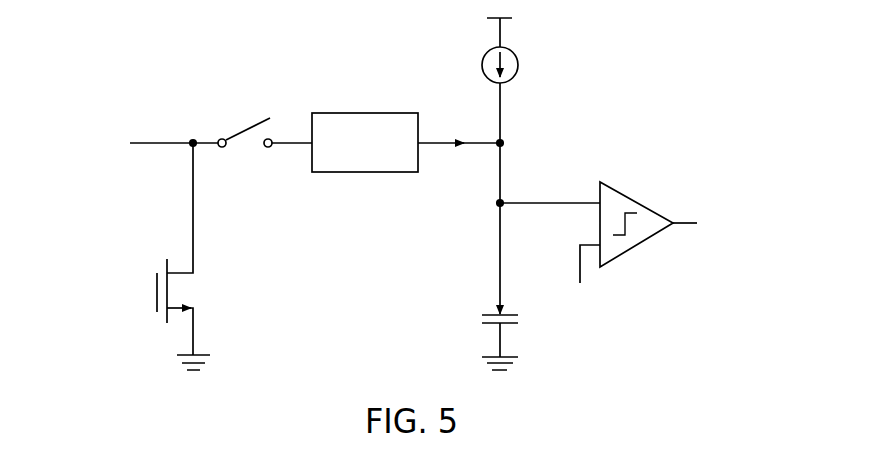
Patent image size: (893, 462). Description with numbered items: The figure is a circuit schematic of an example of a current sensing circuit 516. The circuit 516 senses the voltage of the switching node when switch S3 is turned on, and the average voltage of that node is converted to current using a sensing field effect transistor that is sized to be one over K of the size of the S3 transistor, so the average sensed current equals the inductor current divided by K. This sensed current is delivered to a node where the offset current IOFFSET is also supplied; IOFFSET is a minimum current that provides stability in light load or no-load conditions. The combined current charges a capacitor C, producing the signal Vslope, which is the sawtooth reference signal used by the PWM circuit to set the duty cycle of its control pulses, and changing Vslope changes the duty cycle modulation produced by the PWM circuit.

The current sensing circuit 516 is at (137, 66).
The offset current IOFFSET is at (541, 80).
The capacitor C is at (491, 339).